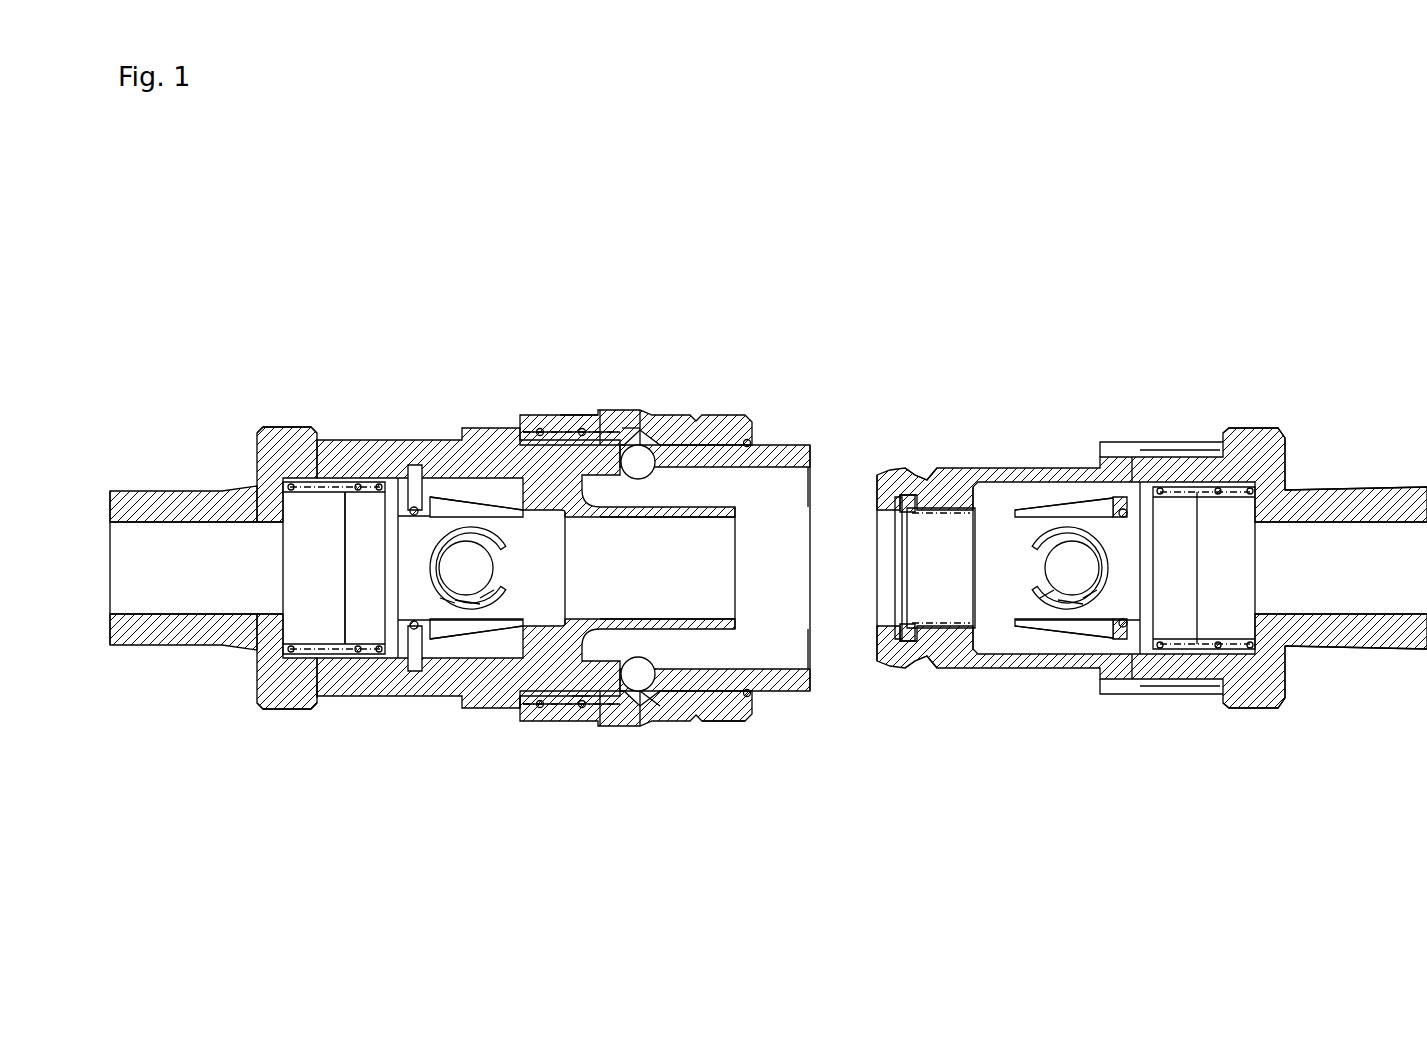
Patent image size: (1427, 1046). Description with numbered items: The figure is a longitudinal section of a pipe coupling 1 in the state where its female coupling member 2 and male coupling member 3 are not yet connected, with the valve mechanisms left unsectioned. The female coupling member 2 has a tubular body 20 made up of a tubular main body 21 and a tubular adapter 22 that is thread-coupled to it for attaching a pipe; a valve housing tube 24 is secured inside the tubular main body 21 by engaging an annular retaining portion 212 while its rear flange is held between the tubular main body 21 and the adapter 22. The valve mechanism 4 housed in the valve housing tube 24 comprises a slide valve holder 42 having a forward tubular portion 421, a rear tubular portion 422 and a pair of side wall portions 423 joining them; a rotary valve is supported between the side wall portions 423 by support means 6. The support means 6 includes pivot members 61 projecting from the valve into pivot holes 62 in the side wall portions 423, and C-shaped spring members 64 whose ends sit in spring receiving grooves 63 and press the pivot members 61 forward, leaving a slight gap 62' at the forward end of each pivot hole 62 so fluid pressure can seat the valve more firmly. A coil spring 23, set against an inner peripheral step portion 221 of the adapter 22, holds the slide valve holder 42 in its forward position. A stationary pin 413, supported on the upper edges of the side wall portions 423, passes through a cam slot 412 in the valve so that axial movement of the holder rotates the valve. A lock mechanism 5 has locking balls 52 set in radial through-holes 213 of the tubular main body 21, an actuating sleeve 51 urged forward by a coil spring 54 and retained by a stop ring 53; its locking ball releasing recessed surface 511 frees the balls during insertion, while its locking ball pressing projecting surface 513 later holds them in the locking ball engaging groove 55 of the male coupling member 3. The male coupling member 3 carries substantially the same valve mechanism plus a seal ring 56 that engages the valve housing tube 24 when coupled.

The pipe coupling 1 is at (838, 256).
The female coupling member 2 is at (457, 404).
The male coupling member 3 is at (1181, 423).
The valve mechanism 4 is at (477, 500).
The lock mechanism 5 is at (704, 403).
The support means 6 is at (762, 551).
The tubular body 20 is at (261, 424).
The tubular main body 21 is at (506, 434).
The tubular adapter 22 is at (257, 703).
The coil spring 23 is at (291, 690).
The valve housing tube 24 is at (522, 708).
The slide valve holder 42 is at (383, 658).
The actuating sleeve 51 is at (746, 722).
The locking balls 52 is at (645, 459).
The stop ring 53 is at (746, 445).
The coil spring 54 is at (578, 424).
The locking ball engaging groove 55 is at (926, 476).
The seal ring 56 is at (907, 644).
The pivot members 61 is at (458, 574).
The pivot holes 62 is at (769, 704).
The gap 62' is at (769, 529).
The spring receiving grooves 63 is at (486, 604).
The spring members 64 is at (462, 596).
The annular retaining portion 212 is at (580, 700).
The radial through-holes 213 is at (631, 428).
The inner peripheral step portion 221 is at (257, 651).
The cam slot 412 is at (688, 540).
The pin 413 is at (412, 504).
The forward tubular portion 421 is at (945, 532).
The rear tubular portion 422 is at (367, 517).
The side wall portions 423 is at (400, 542).
The locking ball releasing recessed surface 511 is at (710, 708).
The locking ball pressing projecting surface 513 is at (644, 698).